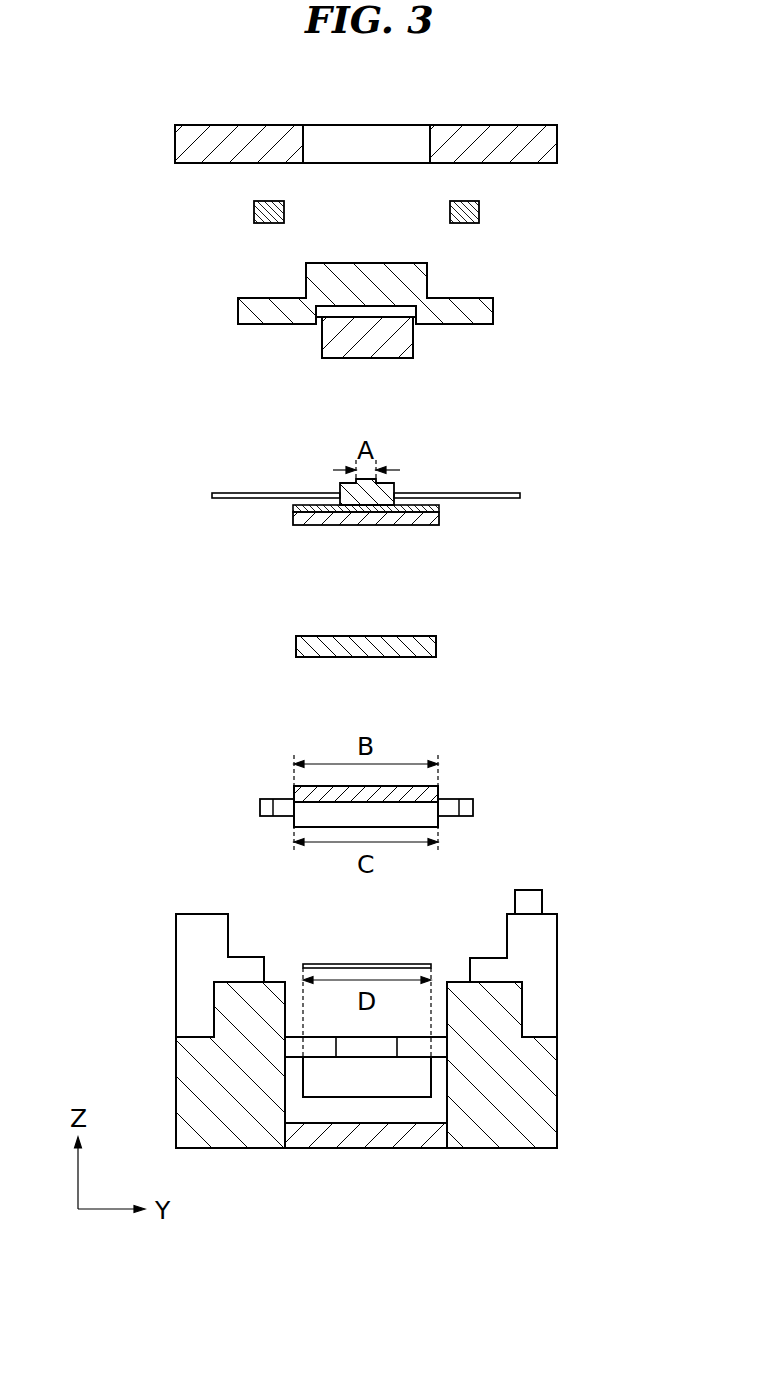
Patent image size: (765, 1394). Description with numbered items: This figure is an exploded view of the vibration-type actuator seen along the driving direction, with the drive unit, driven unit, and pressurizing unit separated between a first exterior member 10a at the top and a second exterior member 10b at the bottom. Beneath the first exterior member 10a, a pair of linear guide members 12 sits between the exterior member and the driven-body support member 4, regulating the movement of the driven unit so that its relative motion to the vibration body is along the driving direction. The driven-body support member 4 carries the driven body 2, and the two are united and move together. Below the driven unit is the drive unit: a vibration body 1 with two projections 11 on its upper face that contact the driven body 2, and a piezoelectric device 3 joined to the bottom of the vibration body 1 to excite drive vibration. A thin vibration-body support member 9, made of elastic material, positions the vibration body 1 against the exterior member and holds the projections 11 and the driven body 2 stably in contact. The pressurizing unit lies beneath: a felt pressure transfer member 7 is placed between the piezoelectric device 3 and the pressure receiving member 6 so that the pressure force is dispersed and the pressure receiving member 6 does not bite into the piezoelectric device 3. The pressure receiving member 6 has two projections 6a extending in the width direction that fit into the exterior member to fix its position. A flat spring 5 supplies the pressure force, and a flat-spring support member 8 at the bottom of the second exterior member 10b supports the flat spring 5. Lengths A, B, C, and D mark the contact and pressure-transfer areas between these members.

The first exterior member 10a is at (547, 142).
The linear guide member 12 is at (254, 211).
The driven-body support member 4 is at (493, 308).
The driven body 2 is at (413, 349).
The vibration-body support member 9 is at (258, 493).
The projections 11 is at (392, 487).
The vibration body 1 is at (440, 504).
The piezoelectric device 3 is at (440, 519).
The pressure transfer member 7 is at (436, 645).
The pressure receiving member 6 is at (433, 818).
The projections 6a is at (260, 810).
The flat spring 5 is at (386, 962).
The second exterior member 10b is at (557, 1088).
The flat-spring support member 8 is at (394, 1112).